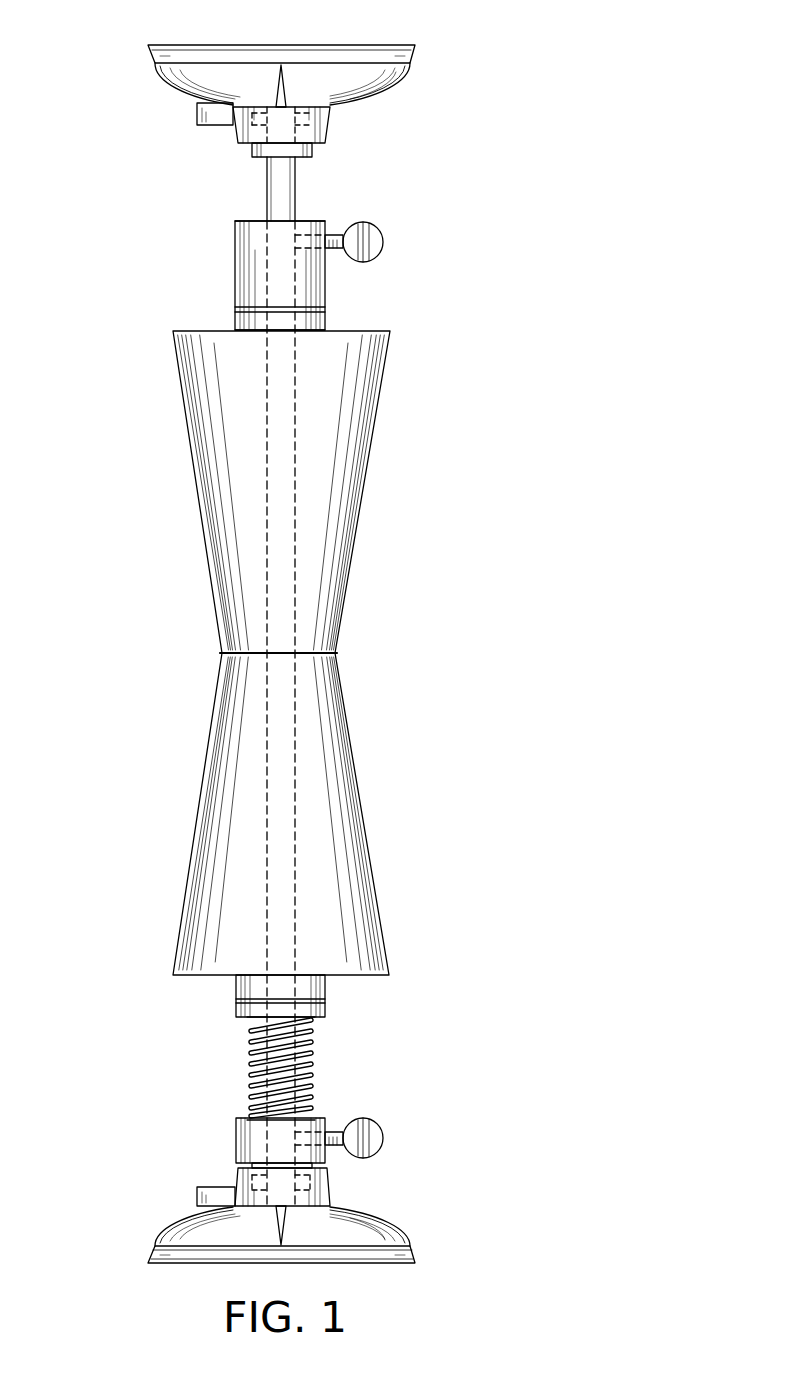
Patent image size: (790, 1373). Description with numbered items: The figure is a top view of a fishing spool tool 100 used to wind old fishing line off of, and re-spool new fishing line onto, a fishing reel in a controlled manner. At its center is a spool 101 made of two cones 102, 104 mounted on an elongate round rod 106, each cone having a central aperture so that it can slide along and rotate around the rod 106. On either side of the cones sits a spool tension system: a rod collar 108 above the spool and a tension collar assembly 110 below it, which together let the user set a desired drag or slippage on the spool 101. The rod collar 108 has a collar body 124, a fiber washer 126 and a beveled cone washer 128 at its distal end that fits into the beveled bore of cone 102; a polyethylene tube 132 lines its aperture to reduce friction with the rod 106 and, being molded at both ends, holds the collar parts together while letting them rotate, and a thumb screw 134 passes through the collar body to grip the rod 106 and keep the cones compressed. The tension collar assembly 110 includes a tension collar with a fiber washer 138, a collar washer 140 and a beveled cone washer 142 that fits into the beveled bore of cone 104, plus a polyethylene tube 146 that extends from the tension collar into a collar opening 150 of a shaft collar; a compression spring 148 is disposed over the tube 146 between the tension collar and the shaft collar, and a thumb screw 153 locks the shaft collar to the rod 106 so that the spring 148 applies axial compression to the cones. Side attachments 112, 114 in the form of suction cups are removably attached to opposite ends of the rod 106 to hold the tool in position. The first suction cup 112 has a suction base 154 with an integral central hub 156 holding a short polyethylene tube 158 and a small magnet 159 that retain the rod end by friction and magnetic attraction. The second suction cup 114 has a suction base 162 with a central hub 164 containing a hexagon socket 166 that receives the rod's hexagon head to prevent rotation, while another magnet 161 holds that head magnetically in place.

The fishing spool tool 100 is at (528, 112).
The spool 101 is at (122, 592).
The cone 102 is at (178, 427).
The cone 104 is at (187, 802).
The rod 106 is at (308, 192).
The rod collar 108 is at (227, 265).
The tension collar assembly 110 is at (356, 1076).
The side attachment (first suction cup) 112 is at (404, 86).
The side attachment (second suction cup) 114 is at (404, 1222).
The collar body 124 is at (255, 290).
The fiber washer 126 is at (310, 305).
The beveled cone washer 128 is at (330, 326).
The polyethylene tube 132 is at (267, 218).
The thumb screw 134 is at (385, 226).
The fiber washer 138 is at (300, 1000).
The collar washer 140 is at (236, 1013).
The beveled cone washer 142 is at (330, 978).
The polyethylene tube 146 is at (250, 1055).
The compression spring 148 is at (315, 1070).
The collar opening 150 is at (245, 1153).
The thumb screw 153 is at (380, 1145).
The suction base 154 is at (330, 46).
The central hub 156 is at (310, 118).
The polyethylene tube 158 is at (250, 150).
The magnet 159 is at (255, 113).
The magnet 161 is at (255, 1197).
The suction base 162 is at (355, 1262).
The central hub 164 is at (235, 1185).
The hexagon socket 166 is at (300, 1175).